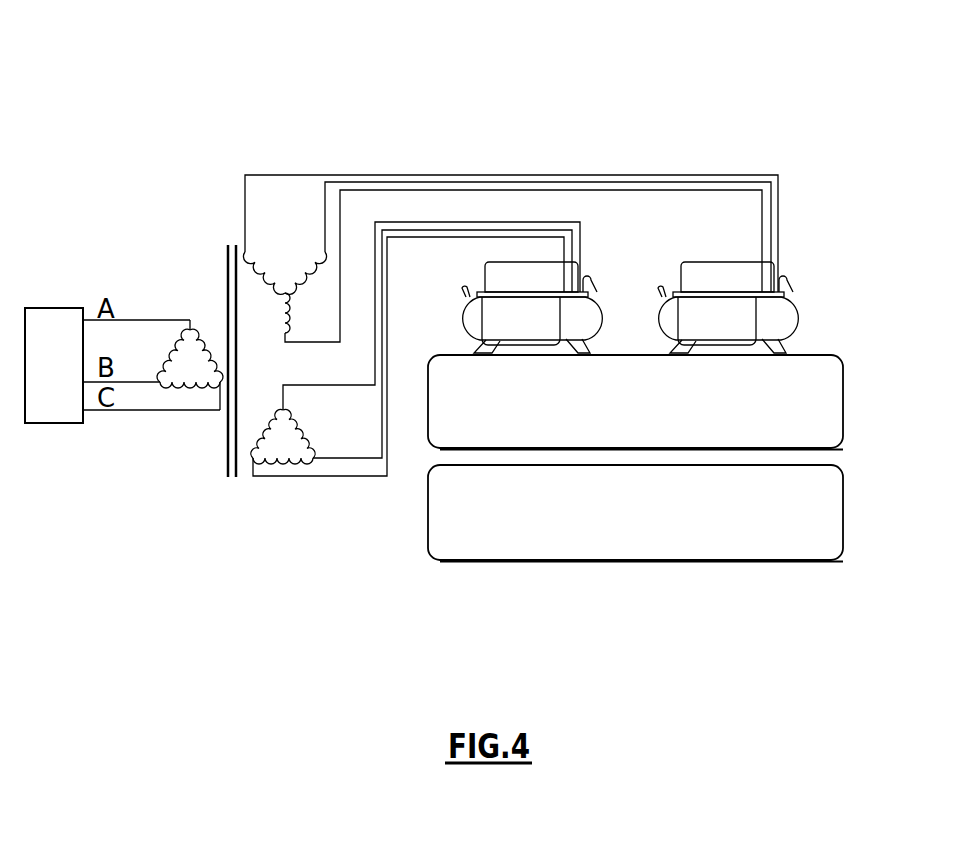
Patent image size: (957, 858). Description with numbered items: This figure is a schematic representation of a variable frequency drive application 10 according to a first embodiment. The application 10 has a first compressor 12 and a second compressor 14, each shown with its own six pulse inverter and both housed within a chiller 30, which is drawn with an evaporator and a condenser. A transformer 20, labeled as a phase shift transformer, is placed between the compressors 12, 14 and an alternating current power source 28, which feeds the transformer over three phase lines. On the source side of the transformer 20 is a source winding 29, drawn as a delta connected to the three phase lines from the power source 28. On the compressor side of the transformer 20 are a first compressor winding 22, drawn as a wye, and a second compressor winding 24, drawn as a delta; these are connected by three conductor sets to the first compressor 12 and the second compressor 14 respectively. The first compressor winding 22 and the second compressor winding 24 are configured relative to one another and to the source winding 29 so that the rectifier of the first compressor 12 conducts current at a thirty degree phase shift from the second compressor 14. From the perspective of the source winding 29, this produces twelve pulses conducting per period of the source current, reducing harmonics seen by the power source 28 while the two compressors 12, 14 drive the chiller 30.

The variable frequency drive application 10 is at (165, 72).
The first compressor 12 is at (686, 262).
The second compressor 14 is at (490, 262).
The transformer 20 is at (190, 446).
The first compressor winding 22 is at (312, 258).
The second compressor winding 24 is at (300, 458).
The alternating current power source 28 is at (72, 379).
The source winding 29 is at (200, 338).
The chiller 30 is at (856, 352).